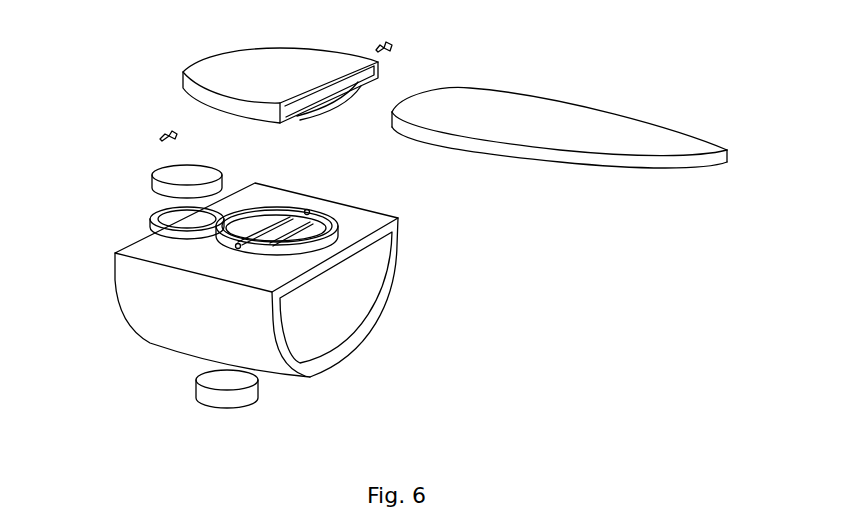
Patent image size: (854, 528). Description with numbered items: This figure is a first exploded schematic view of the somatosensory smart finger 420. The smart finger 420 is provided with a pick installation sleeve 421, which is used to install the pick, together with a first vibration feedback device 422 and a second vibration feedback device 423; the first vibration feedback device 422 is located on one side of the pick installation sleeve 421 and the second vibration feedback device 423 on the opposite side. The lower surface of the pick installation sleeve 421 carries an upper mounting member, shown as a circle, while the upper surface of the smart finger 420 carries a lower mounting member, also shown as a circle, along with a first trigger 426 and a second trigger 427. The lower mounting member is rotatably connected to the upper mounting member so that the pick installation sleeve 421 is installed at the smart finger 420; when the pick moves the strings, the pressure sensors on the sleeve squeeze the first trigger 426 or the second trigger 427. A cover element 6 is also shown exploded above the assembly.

The cover panel 6 is at (483, 97).
The smart finger 420 is at (163, 260).
The pick installation sleeve 421 is at (282, 60).
The first vibration feedback device 422 is at (180, 173).
The second vibration feedback device 423 is at (233, 387).
The first trigger 426 is at (260, 220).
The second trigger 427 is at (310, 230).